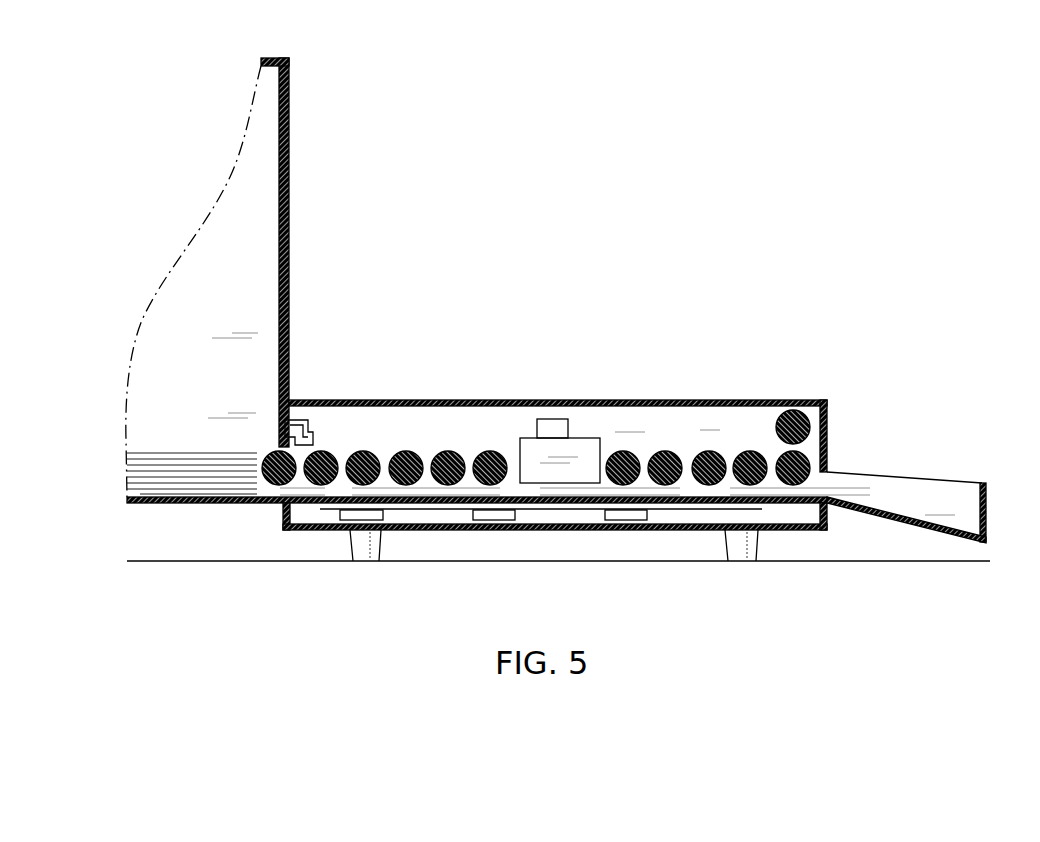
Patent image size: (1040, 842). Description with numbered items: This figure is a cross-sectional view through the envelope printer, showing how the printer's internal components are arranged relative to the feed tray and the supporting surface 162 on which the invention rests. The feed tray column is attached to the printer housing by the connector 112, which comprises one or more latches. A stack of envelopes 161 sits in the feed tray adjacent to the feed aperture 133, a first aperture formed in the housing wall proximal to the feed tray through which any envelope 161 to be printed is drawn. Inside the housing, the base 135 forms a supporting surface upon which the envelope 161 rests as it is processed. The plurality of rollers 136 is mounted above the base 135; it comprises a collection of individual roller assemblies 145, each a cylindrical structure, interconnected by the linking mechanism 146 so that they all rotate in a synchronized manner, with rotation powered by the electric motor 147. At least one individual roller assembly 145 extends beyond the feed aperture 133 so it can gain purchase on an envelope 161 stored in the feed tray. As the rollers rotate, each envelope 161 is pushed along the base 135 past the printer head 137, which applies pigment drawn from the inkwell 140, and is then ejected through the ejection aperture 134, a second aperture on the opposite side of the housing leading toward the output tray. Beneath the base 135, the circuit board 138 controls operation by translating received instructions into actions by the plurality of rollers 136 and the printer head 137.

The connector 112 is at (316, 428).
The feed aperture 133 is at (284, 503).
The ejection aperture 134 is at (828, 471).
The base 135 is at (795, 503).
The plurality of rollers 136 is at (700, 448).
The printer head 137 is at (588, 452).
The circuit board 138 is at (568, 508).
The inkwell 140 is at (553, 430).
The individual roller assembly 145 is at (282, 458).
The linking mechanism 146 is at (473, 465).
The electric motor 147 is at (805, 425).
The envelope 161 is at (178, 472).
The supporting surface 162 is at (262, 562).